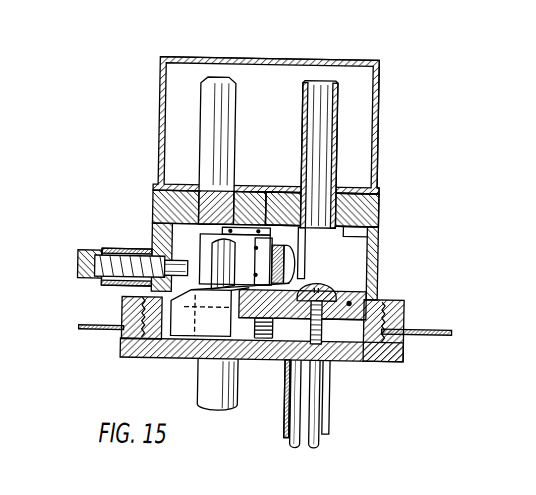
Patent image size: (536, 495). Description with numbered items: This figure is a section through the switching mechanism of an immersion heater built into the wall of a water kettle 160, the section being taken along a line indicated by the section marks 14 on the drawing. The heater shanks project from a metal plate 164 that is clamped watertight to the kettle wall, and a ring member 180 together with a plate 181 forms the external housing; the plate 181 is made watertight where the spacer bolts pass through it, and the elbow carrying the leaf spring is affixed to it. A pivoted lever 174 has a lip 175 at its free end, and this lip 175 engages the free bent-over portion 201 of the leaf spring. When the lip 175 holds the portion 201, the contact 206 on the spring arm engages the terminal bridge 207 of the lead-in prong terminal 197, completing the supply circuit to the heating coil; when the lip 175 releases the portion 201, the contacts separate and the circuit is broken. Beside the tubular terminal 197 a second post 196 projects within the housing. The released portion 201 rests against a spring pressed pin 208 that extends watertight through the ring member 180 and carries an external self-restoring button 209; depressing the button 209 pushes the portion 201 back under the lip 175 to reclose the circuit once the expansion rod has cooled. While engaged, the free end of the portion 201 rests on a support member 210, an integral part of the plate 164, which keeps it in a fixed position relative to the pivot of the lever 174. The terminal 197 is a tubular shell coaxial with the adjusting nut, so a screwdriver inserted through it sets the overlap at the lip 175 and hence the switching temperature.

The section line 14- 14 is at (172, 236).
The water kettle 160 is at (442, 327).
The metal plate 164 is at (383, 362).
The lever 174 is at (292, 313).
The lip 175 is at (213, 297).
The ring member 180 is at (152, 199).
The plate 181 is at (378, 207).
The post 196 is at (233, 97).
The lead-in prong terminal 197 is at (303, 126).
The bent-over portion 201 is at (170, 348).
The contact 206 is at (294, 252).
The terminal bridge 207 is at (303, 279).
The spring pressed pin 208 is at (123, 288).
The external button 209 is at (78, 261).
The support member 210 is at (200, 362).